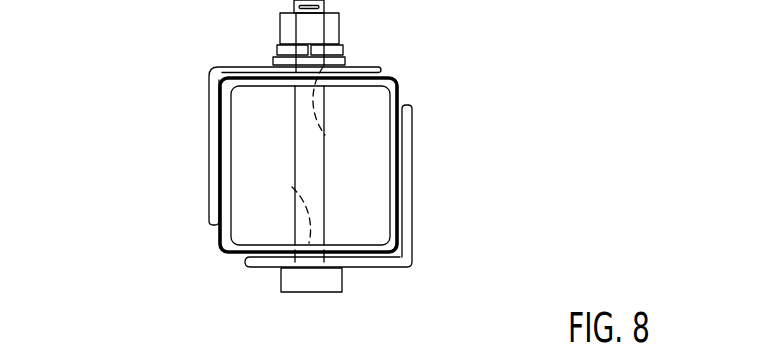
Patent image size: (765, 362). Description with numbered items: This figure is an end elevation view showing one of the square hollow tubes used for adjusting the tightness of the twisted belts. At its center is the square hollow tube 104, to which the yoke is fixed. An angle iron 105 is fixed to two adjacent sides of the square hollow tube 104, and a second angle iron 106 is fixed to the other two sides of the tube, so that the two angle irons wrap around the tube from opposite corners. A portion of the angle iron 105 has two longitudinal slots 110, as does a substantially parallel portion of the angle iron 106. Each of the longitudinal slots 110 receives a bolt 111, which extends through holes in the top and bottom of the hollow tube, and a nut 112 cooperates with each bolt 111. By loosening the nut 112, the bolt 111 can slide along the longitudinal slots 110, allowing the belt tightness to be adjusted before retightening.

The square hollow tube 104 is at (398, 80).
The angle iron 105 is at (208, 150).
The angle iron 106 is at (412, 190).
The longitudinal slot 110 is at (325, 135).
The bolt 111 is at (342, 288).
The nut 112 is at (339, 33).